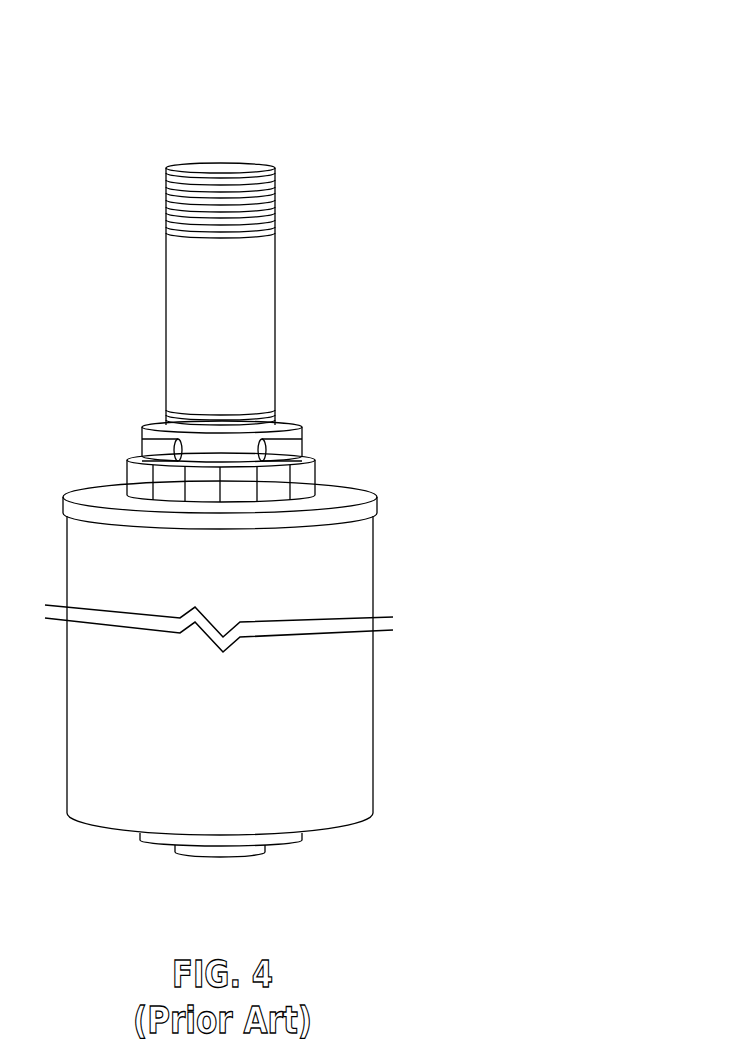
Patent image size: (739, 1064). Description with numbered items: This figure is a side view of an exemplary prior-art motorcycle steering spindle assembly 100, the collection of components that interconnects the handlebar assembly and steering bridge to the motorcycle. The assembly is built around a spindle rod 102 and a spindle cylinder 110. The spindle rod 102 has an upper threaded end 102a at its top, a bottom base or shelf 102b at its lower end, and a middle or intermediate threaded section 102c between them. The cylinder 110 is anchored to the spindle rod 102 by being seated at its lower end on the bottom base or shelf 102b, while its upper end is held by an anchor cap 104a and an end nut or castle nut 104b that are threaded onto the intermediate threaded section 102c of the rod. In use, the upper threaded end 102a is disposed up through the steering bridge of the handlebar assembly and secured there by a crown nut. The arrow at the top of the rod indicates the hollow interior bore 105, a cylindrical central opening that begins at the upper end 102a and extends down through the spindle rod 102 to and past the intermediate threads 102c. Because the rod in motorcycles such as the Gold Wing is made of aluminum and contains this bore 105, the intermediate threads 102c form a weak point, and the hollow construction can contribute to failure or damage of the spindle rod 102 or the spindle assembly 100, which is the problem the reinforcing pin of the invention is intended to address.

The motorcycle steering spindle assembly 100 is at (252, 73).
The spindle rod 102 is at (340, 296).
The upper threaded end 102a is at (275, 182).
The bottom base or shelf 102b is at (282, 840).
The intermediate threaded section 102c is at (266, 415).
The anchor cap 104a is at (374, 473).
The end nut or castle nut 104b is at (373, 419).
The hollow interior bore 105 is at (245, 168).
The spindle cylinder 110 is at (337, 582).